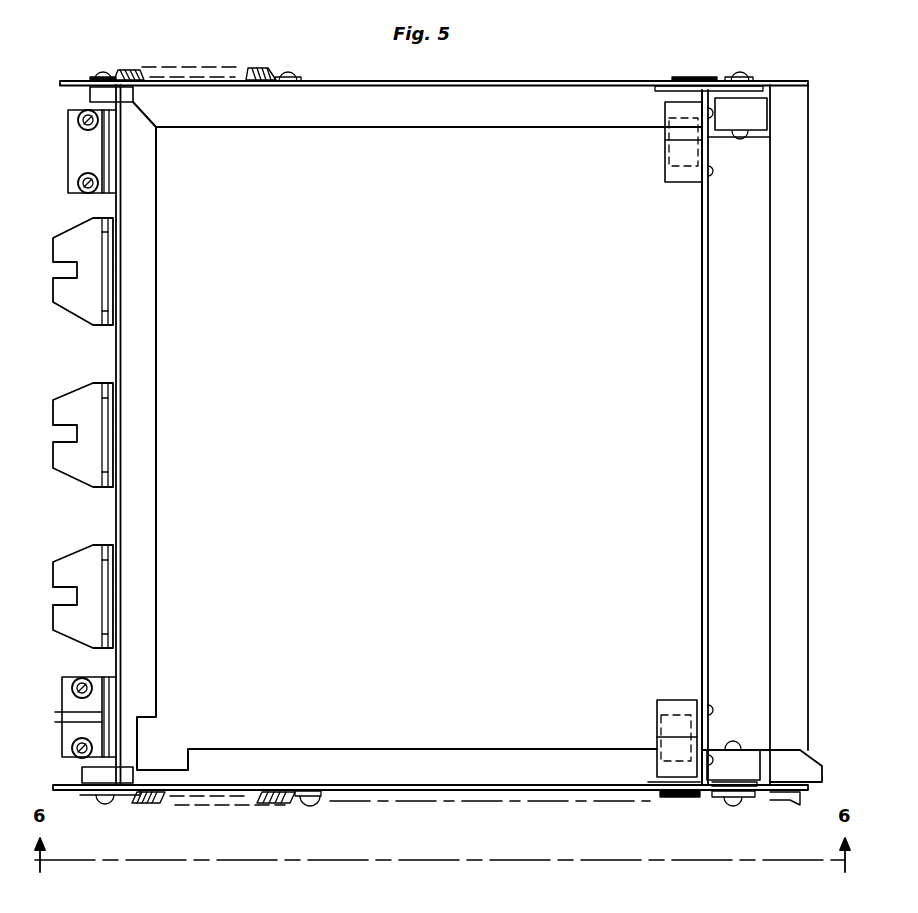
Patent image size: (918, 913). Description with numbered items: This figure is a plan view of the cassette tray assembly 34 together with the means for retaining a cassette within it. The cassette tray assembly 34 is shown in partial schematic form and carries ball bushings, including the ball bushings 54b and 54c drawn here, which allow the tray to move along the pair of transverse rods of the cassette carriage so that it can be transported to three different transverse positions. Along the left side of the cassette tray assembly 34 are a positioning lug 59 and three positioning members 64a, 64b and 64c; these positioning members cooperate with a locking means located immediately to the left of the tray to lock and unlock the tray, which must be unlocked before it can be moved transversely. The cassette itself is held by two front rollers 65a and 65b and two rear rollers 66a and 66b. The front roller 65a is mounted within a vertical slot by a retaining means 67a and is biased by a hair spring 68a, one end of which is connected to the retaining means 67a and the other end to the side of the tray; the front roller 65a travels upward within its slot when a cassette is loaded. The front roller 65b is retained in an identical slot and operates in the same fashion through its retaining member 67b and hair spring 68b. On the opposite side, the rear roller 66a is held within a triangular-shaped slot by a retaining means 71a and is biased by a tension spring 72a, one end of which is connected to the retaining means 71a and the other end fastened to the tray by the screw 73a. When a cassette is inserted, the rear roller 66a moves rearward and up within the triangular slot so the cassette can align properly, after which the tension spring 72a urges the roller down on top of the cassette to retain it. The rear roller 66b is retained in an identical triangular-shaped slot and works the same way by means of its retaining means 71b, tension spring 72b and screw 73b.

The cassette tray assembly 34 is at (500, 128).
The ball bushing 54b is at (676, 712).
The ball bushing 54c is at (675, 148).
The positioning lug 59 is at (62, 716).
The positioning member 64a is at (118, 598).
The positioning member 64b is at (118, 438).
The positioning member 64c is at (118, 276).
The front roller 65a is at (752, 752).
The front roller 65b is at (755, 128).
The rear roller 66a is at (134, 774).
The rear roller 66b is at (134, 94).
The retaining means 67a is at (728, 799).
The retaining member 67b is at (752, 78).
The hair spring 68a is at (676, 799).
The hair spring 68b is at (695, 78).
The retaining means 71a is at (108, 805).
The retaining means 71b is at (96, 74).
The tension spring 72a is at (292, 806).
The tension spring 72b is at (130, 70).
The screw 73a is at (316, 803).
The screw 73b is at (282, 74).